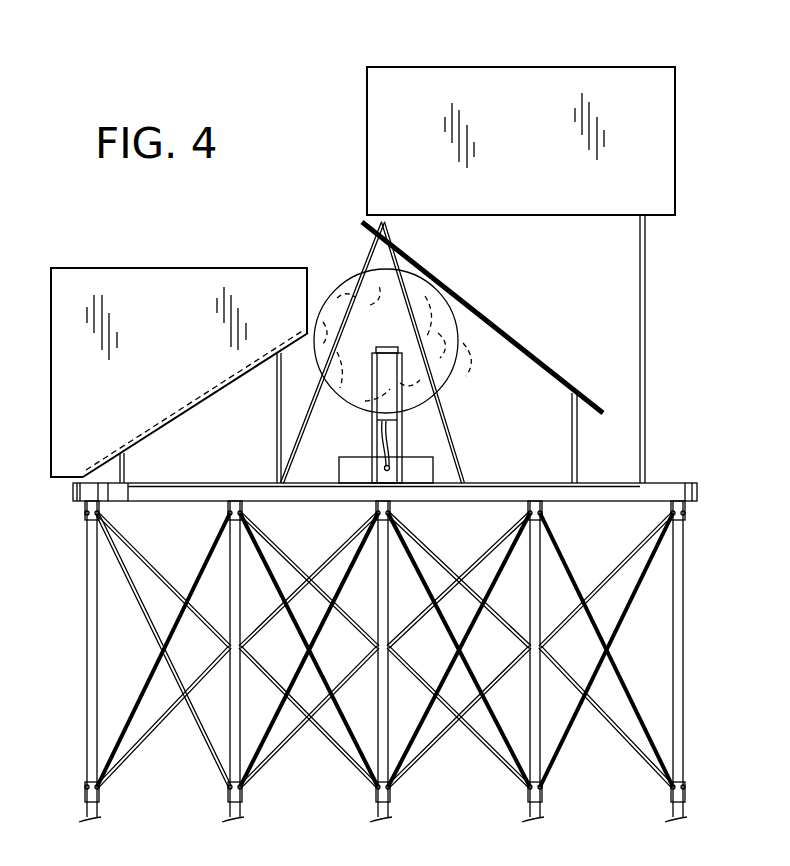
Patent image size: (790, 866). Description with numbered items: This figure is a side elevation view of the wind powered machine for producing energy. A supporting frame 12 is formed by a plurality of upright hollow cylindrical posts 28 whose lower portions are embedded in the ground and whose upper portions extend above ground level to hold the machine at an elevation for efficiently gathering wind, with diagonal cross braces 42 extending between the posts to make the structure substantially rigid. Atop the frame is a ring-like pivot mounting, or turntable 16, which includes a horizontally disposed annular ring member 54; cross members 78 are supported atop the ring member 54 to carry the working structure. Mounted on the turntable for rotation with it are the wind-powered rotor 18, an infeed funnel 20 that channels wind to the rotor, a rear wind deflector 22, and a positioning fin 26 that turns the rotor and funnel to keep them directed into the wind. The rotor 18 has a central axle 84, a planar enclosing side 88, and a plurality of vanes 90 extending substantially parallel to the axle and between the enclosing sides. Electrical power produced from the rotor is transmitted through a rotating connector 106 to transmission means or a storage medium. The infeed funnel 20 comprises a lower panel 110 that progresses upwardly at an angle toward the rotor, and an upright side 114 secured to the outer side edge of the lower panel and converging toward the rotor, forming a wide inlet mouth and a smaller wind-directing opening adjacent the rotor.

The supporting frame 12 is at (698, 631).
The turntable 16 is at (705, 488).
The wind-powered rotor 18 is at (422, 264).
The infeed funnel 20 is at (76, 258).
The rear wind deflector 22 is at (518, 333).
The positioning fin 26 is at (408, 90).
The upright hollow cylindrical posts 28 is at (376, 810).
The diagonal cross braces 42 is at (132, 735).
The ring member 54 is at (78, 493).
The cross members 78 is at (195, 483).
The central axle 84 is at (385, 347).
The enclosing side 88 is at (355, 262).
The vanes 90 is at (444, 367).
The rotating connector 106 is at (418, 466).
The lower panel 110 is at (183, 416).
The upright side 114 is at (175, 296).